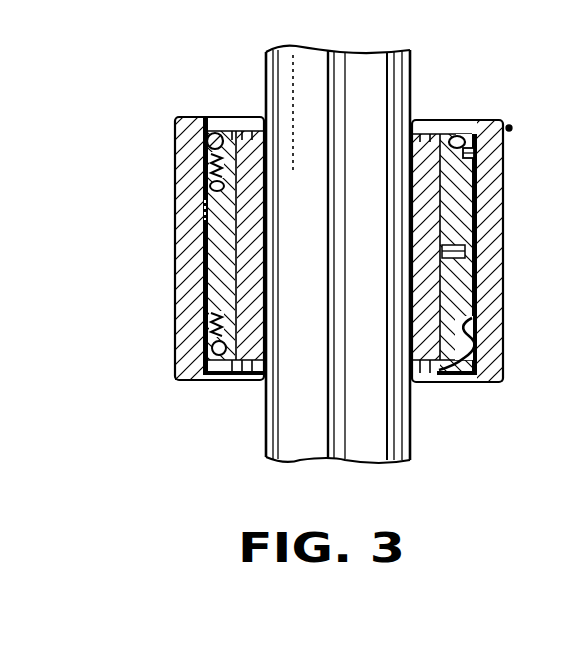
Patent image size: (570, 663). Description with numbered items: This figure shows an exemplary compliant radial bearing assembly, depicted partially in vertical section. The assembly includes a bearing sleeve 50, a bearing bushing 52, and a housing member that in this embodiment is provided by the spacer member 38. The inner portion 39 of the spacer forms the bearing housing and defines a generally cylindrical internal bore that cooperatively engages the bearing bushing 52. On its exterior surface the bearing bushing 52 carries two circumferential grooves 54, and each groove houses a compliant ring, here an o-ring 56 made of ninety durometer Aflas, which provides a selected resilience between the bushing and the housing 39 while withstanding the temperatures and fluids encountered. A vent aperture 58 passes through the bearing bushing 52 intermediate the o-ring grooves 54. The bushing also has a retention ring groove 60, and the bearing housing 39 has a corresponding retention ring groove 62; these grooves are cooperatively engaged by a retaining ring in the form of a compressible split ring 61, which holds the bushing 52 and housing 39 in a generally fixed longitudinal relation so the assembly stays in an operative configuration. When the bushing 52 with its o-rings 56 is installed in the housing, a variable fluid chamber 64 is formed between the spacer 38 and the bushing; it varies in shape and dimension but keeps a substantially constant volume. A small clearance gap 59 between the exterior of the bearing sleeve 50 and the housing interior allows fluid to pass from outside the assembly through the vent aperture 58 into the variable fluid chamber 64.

The spacer member 38 is at (511, 126).
The inner portion of spacer forming bearing housing 39 is at (506, 208).
The bearing sleeve 50 is at (423, 130).
The bearing bushing 52 is at (458, 132).
The circumferential grooves 54 is at (177, 186).
The o-rings 56 is at (177, 172).
The vent aperture 58 is at (493, 270).
The clearance gap 59 is at (437, 382).
The retention ring groove 60 is at (208, 118).
The compressible split ring 61 is at (507, 149).
The retention ring groove 62 is at (177, 135).
The variable fluid chamber 64 is at (177, 233).